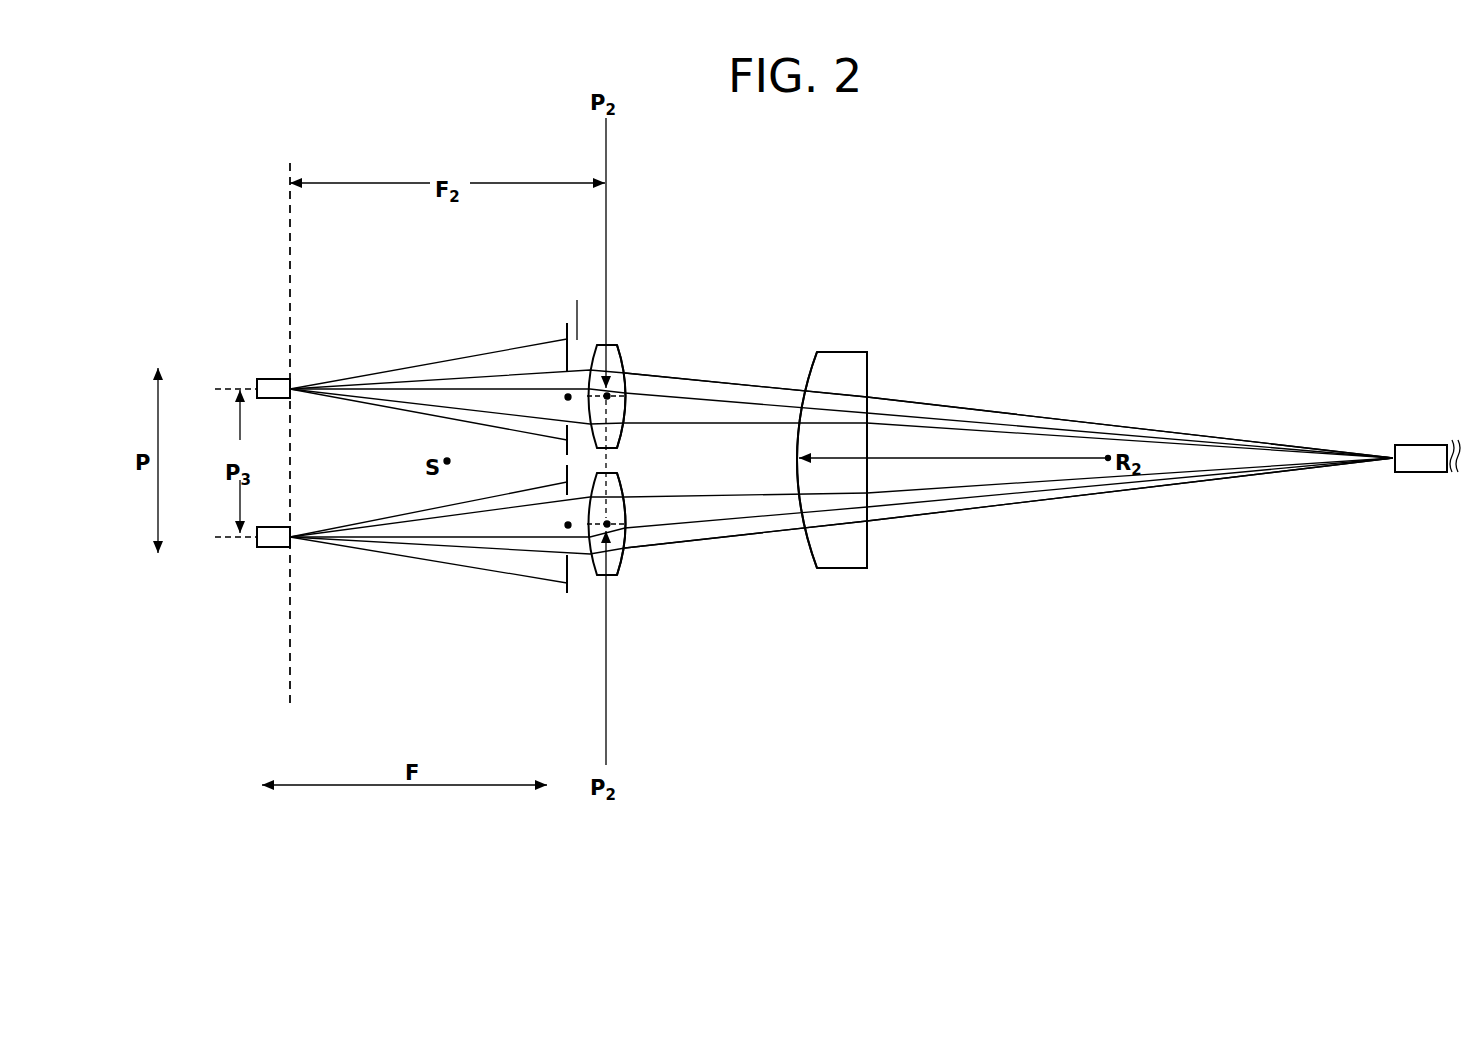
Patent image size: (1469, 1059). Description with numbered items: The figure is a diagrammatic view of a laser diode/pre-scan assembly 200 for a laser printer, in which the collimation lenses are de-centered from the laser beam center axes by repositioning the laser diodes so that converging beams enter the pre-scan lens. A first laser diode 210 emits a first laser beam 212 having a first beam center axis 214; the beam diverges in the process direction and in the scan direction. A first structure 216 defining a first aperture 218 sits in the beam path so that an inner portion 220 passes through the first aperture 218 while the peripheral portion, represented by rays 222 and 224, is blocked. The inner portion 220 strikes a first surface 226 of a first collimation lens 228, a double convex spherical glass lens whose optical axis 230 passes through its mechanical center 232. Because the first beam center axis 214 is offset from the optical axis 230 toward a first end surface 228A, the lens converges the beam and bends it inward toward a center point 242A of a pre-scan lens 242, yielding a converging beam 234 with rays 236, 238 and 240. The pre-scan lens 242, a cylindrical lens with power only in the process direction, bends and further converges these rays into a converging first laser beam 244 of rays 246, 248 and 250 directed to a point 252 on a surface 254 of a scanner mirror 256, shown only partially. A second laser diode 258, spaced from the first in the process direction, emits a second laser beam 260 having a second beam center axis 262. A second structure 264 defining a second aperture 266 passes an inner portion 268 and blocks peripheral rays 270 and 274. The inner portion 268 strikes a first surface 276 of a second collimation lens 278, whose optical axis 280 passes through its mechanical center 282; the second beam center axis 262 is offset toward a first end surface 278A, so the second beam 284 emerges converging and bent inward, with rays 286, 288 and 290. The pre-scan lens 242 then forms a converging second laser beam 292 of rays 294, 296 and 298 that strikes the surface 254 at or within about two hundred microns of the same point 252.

The laser diode/pre-scan assembly 200 is at (254, 137).
The first laser diode 210 is at (268, 378).
The first laser beam 212 is at (422, 350).
The first beam center axis 214 is at (403, 387).
The first structure 216 is at (565, 332).
The first aperture 218 is at (566, 397).
The inner portion of the first laser beam 220 is at (577, 300).
The ray of peripheral portion of first laser beam 222 is at (337, 378).
The ray of peripheral portion of first laser beam 224 is at (380, 407).
The first surface of first collimation lens 226 is at (577, 355).
The first collimation lens 228 is at (628, 352).
The first end surface of first lens 228A is at (613, 344).
The optical axis of first collimation lens 230 is at (607, 396).
The mechanical center of first collimation lens 232 is at (612, 398).
The converging first laser beam 234 is at (675, 360).
The ray of converging first laser beam 236 is at (703, 374).
The ray of converging first laser beam 238 is at (738, 402).
The ray of converging first laser beam 240 is at (770, 421).
The pre-scan lens 242 is at (847, 347).
The center point of pre-scan lens 242A is at (800, 460).
The converging first laser beam 244 is at (1147, 410).
The ray of converging first laser beam 246 is at (972, 408).
The ray of converging first laser beam 248 is at (998, 423).
The ray of converging first laser beam 250 is at (1060, 437).
The point 252 is at (1390, 450).
The surface of scanner mirror 254 is at (1393, 470).
The scanner mirror 256 is at (1422, 432).
The second laser diode 258 is at (268, 548).
The second laser beam 260 is at (393, 570).
The second beam center axis 262 is at (432, 540).
The second structure 264 is at (567, 470).
The second aperture 266 is at (567, 525).
The inner portion of the second laser beam 268 is at (578, 600).
The ray of peripheral portion of second laser beam 270 is at (392, 512).
The ray of peripheral portion of second laser beam 274 is at (362, 549).
The first surface of second collimation lens 276 is at (585, 567).
The second collimation lens 278 is at (627, 575).
The first end surface of second lens 278A is at (613, 575).
The optical axis of second collimation lens 280 is at (606, 500).
The mechanical center of second collimation lens 282 is at (607, 524).
The converging second laser beam 284 is at (682, 549).
The ray of converging second laser beam 286 is at (697, 498).
The ray of converging second laser beam 288 is at (747, 517).
The ray of converging second laser beam 290 is at (787, 533).
The converging second laser beam 292 is at (1120, 507).
The ray of converging second laser beam 294 is at (902, 518).
The ray of converging second laser beam 296 is at (962, 498).
The ray of converging second laser beam 298 is at (1040, 483).